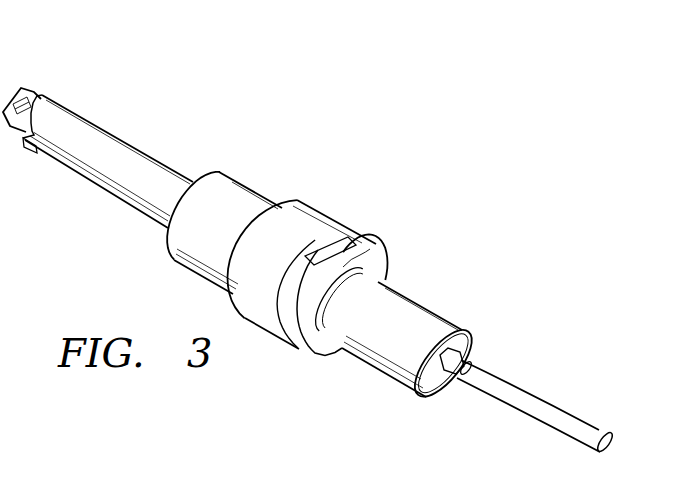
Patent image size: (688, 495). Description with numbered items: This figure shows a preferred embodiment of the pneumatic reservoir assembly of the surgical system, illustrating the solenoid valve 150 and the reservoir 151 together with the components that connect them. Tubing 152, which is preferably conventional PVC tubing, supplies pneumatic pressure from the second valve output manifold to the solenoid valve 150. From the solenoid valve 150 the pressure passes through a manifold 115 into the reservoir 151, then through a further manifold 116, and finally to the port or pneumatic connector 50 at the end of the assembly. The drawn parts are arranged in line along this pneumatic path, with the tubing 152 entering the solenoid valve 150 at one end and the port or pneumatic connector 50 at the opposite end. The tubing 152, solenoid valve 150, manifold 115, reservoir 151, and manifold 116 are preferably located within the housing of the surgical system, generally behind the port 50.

The port or pneumatic connector 50 is at (43, 98).
The manifold 116 is at (128, 140).
The reservoir 151 is at (310, 219).
The manifold 115 is at (366, 256).
The solenoid valve 150 is at (408, 308).
The tubing 152 is at (540, 405).